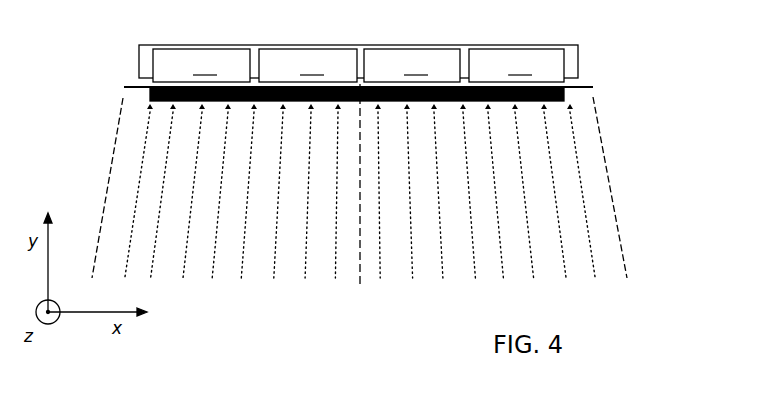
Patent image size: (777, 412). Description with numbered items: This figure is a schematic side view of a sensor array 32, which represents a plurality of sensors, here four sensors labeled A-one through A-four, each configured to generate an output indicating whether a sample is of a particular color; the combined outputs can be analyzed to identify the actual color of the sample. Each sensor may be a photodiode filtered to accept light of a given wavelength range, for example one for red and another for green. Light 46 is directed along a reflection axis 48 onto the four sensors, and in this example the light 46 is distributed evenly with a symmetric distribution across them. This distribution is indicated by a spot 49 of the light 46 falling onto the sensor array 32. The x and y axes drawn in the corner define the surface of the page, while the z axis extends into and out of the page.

The sensor array 32 is at (578, 63).
The spot 49 is at (150, 97).
The light 46 is at (307, 281).
The reflection axis 48 is at (360, 285).